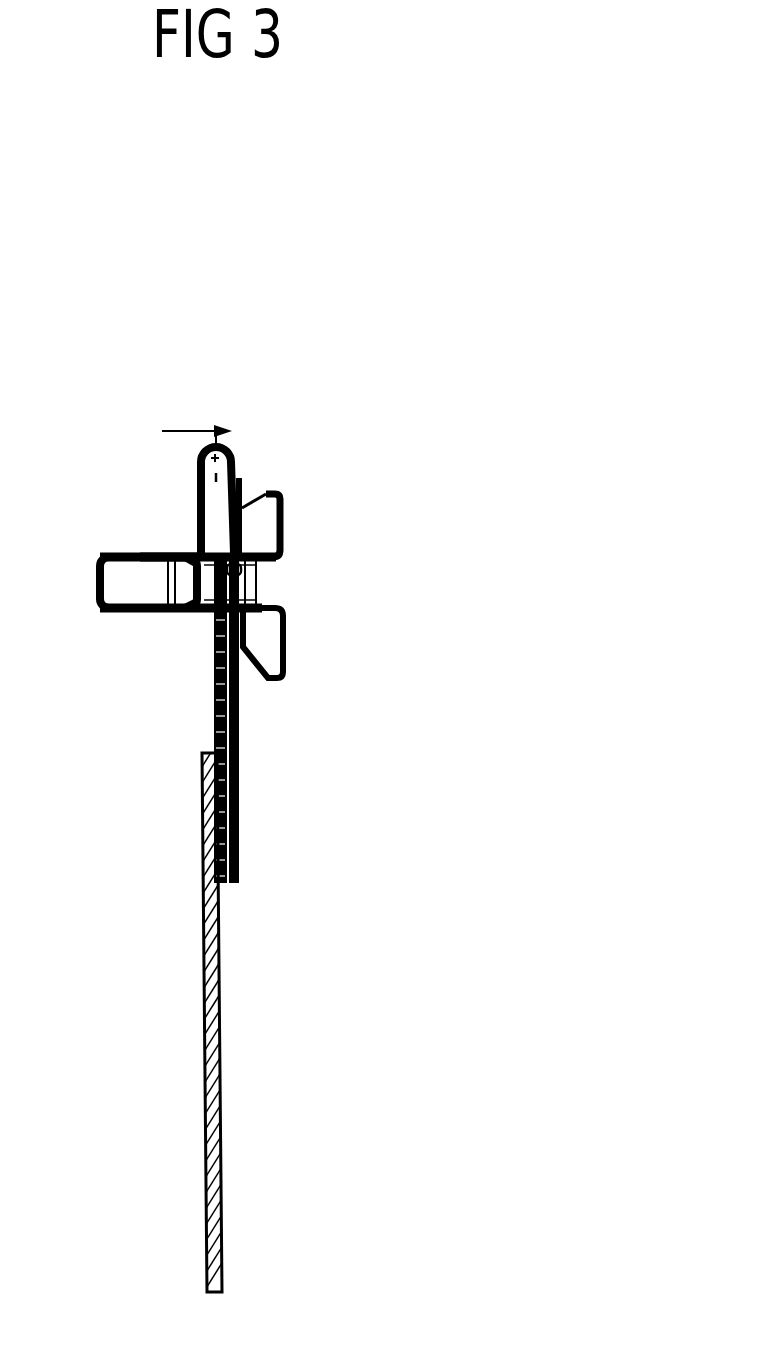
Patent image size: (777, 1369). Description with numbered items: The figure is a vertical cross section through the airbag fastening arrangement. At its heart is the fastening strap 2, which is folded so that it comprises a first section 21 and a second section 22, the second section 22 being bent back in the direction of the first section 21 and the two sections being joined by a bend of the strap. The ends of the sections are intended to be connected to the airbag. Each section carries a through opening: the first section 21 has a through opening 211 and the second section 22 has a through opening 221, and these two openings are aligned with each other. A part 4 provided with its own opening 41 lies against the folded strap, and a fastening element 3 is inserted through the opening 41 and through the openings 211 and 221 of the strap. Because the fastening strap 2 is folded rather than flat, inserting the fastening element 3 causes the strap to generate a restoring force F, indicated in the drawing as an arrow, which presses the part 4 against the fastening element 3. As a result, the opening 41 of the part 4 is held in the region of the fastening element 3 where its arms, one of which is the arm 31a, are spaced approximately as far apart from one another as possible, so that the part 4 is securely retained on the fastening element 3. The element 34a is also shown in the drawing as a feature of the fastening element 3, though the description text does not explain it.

The fastening strap 2 is at (203, 408).
The first section 21 is at (200, 492).
The second section 22 is at (237, 463).
The through opening 221 is at (240, 573).
The through opening 211 is at (152, 556).
The fastening element 3 is at (301, 515).
The arm 31a is at (137, 592).
The clip tab 34a is at (241, 508).
The opening 41 is at (257, 588).
The part 4 is at (241, 845).
The restoring force F is at (185, 431).